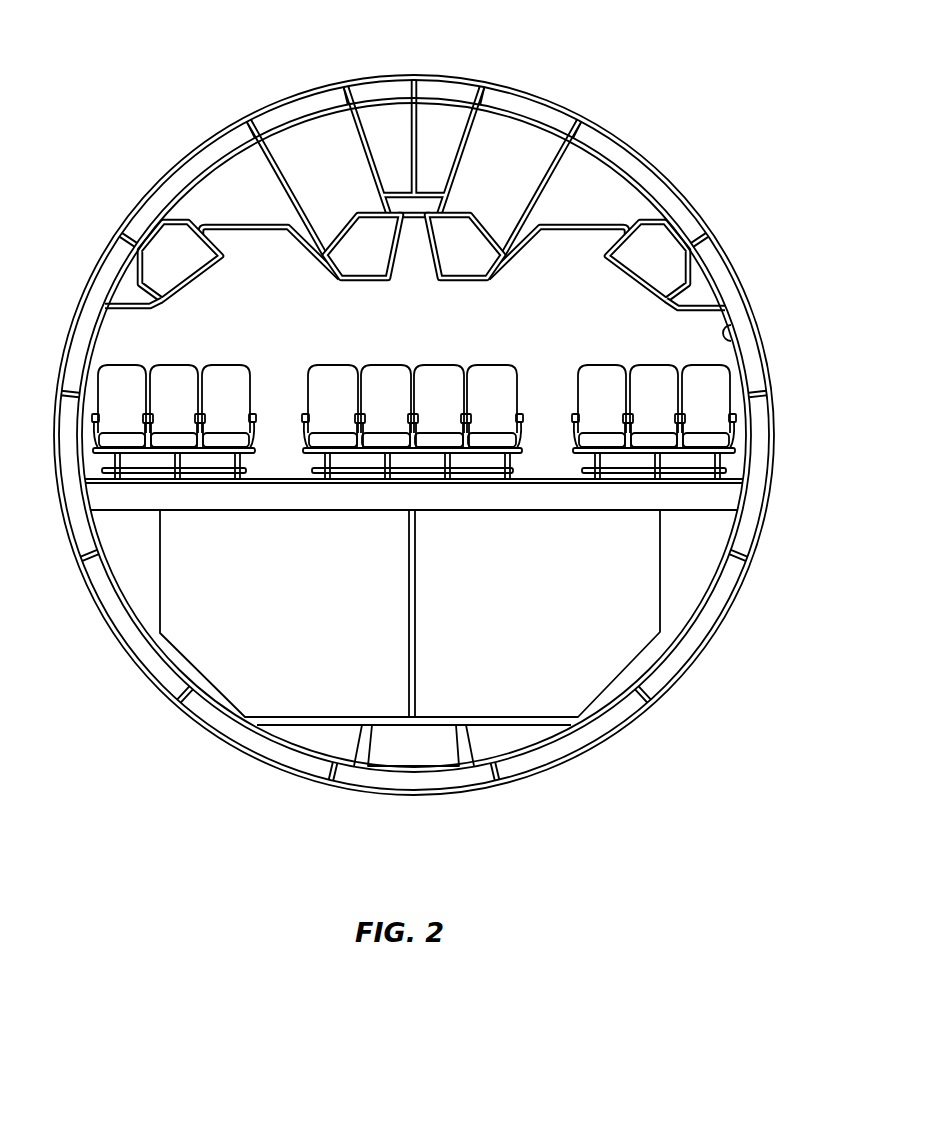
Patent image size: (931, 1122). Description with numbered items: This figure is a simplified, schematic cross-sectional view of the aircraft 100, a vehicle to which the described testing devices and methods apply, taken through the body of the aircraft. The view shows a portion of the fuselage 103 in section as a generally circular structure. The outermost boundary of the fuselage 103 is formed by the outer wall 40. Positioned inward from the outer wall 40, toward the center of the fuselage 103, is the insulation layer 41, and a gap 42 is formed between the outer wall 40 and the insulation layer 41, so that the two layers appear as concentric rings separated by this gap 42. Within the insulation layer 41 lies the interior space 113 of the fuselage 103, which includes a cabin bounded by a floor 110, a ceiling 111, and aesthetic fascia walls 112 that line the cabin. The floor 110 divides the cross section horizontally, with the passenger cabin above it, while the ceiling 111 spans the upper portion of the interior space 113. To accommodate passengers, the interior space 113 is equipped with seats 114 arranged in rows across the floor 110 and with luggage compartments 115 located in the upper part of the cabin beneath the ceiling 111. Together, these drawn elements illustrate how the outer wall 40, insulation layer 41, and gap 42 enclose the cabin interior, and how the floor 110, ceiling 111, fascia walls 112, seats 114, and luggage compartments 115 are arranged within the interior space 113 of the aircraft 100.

The aircraft 100 is at (121, 64).
The outer wall 40 is at (300, 85).
The insulation layer 41 is at (195, 173).
The gap 42 is at (205, 158).
The fuselage 103 is at (655, 164).
The floor 110 is at (732, 478).
The ceiling 111 is at (625, 222).
The aesthetic fascia walls 112 is at (725, 330).
The interior space 113 is at (165, 316).
The seats 114 is at (172, 379).
The luggage compartments 115 is at (188, 262).